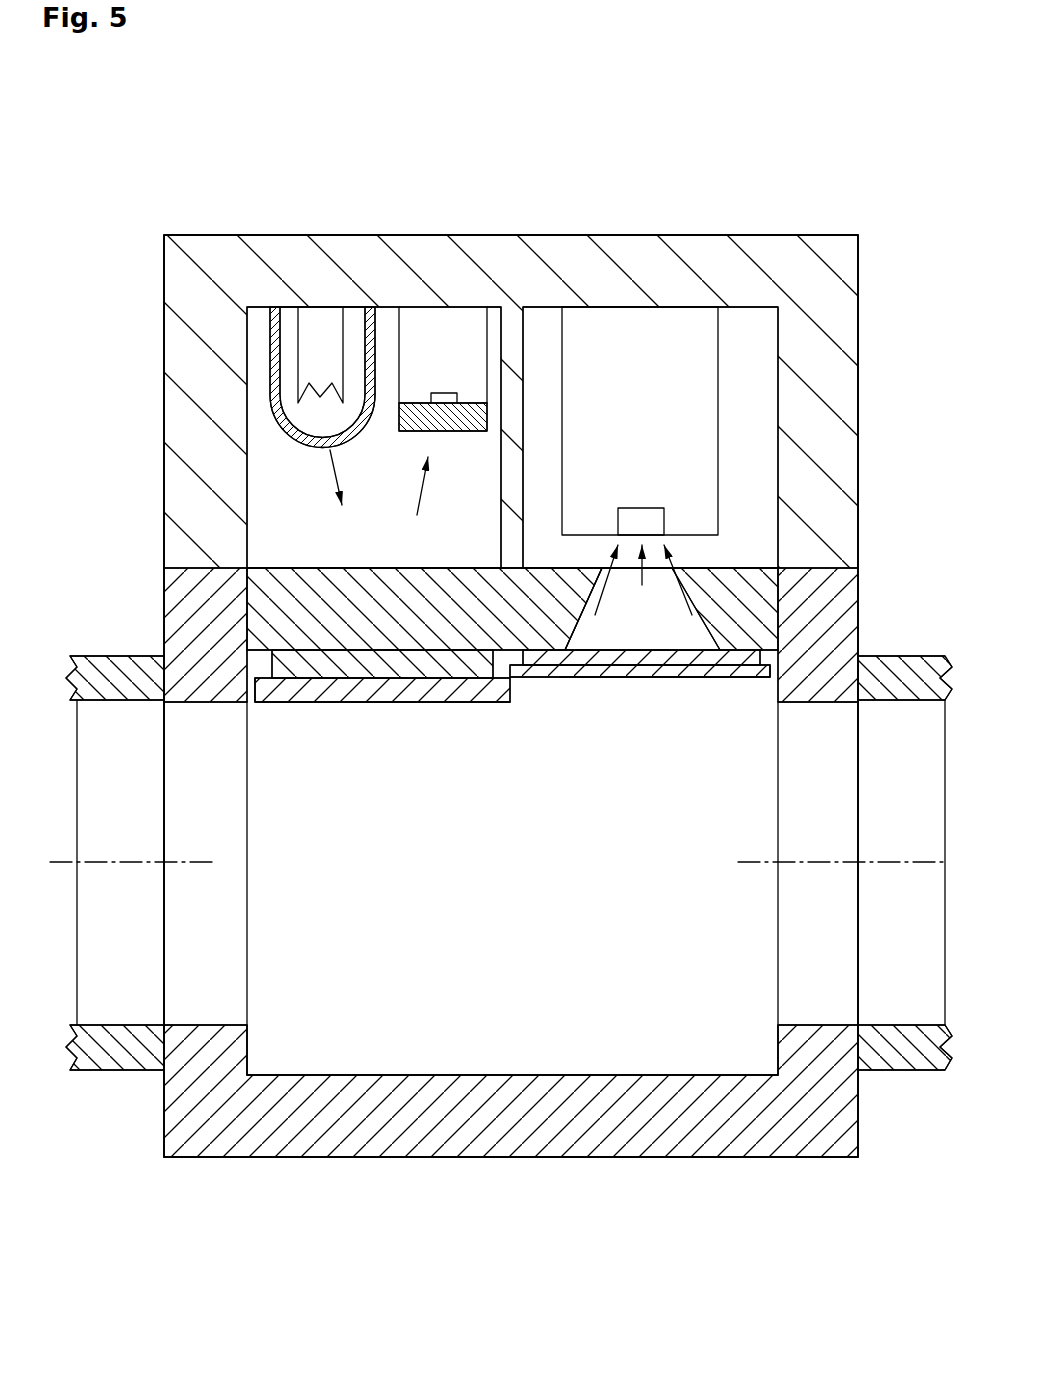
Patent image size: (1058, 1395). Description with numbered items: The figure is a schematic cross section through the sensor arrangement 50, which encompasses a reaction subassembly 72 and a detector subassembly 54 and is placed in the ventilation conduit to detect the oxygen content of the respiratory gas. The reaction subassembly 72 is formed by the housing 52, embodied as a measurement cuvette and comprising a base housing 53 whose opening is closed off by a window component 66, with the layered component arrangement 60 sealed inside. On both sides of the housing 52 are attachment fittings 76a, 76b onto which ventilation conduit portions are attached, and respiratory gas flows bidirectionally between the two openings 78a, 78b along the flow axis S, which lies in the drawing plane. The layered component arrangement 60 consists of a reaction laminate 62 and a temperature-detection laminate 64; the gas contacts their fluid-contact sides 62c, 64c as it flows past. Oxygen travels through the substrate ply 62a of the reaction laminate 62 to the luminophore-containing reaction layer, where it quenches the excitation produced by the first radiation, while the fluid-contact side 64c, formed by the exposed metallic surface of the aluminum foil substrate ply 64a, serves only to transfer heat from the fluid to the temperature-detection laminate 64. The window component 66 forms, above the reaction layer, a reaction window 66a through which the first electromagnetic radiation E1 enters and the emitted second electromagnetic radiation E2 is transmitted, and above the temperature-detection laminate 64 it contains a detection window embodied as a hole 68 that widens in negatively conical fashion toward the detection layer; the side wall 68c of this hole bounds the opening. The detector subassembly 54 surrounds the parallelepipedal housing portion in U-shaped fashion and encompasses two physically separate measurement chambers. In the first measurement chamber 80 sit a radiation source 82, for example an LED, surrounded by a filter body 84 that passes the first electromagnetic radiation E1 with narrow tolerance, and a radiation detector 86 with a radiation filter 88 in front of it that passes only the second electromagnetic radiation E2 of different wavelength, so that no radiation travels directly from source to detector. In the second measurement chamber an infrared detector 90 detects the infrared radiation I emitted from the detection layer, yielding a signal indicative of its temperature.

The sensor arrangement 50 is at (145, 1283).
The housing 52 is at (322, 1177).
The reaction subassembly 72 is at (511, 1145).
The base housing 53 is at (538, 1152).
The detector subassembly 54 is at (140, 218).
The layered component arrangement 60 is at (513, 766).
The reaction laminate 62 is at (382, 749).
The substrate ply 62a is at (403, 702).
The fluid-contact side 62c is at (300, 702).
The temperature-detection laminate 64 is at (640, 735).
The substrate ply 64a is at (655, 672).
The fluid-contact side 64c is at (705, 676).
The window component 66 is at (352, 608).
The reaction window 66a is at (340, 567).
The hole 68 is at (657, 623).
The nozzle opening side wall 68c is at (590, 624).
The attachment fitting 76a is at (118, 672).
The attachment fitting 76b is at (898, 670).
The opening 78a is at (232, 906).
The opening 78b is at (793, 978).
The first measurement chamber 80 is at (285, 558).
The radiation source 82 is at (352, 318).
The filter body 84 is at (387, 325).
The radiation detector 86 is at (459, 367).
The radiation filter 88 is at (418, 420).
The infrared detector 90 is at (655, 435).
The first electromagnetic radiation E1 is at (338, 480).
The second electromagnetic radiation E2 is at (426, 482).
The infrared radiation I is at (650, 560).
The flow axis S is at (898, 860).